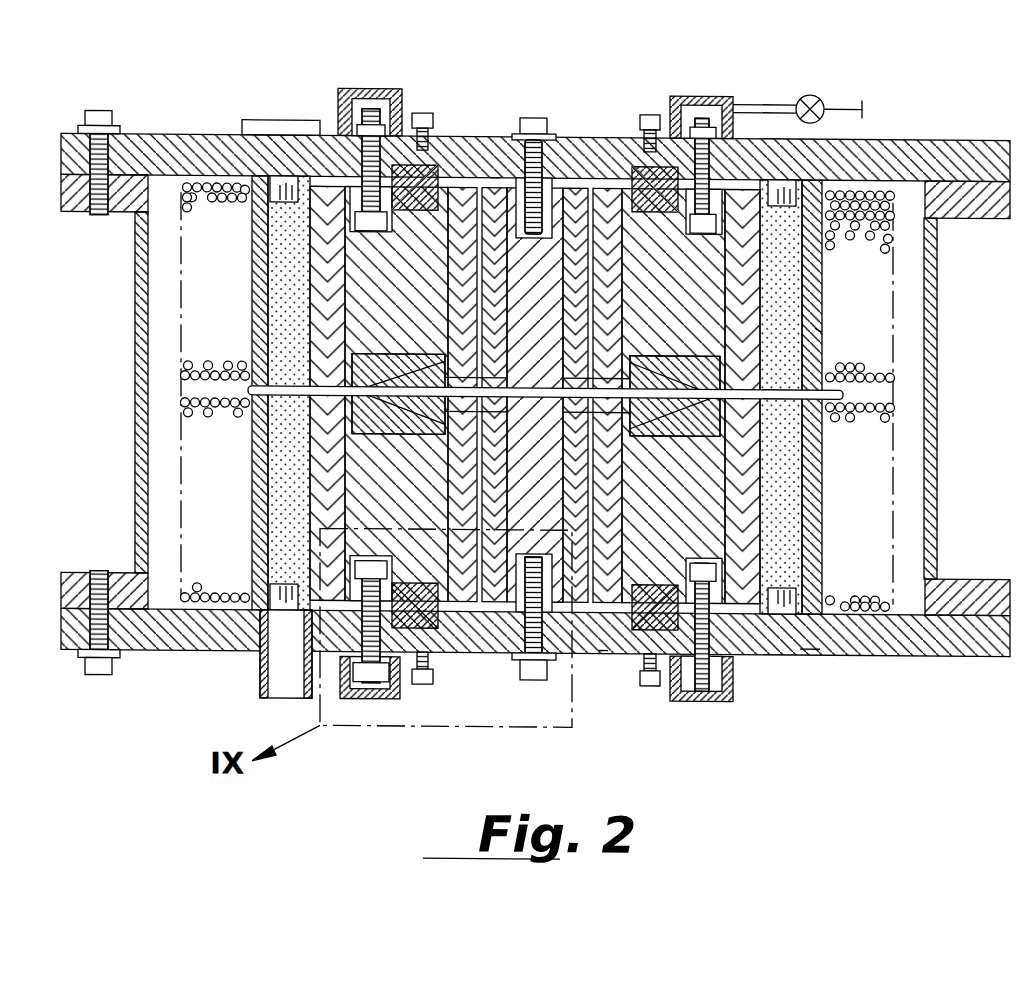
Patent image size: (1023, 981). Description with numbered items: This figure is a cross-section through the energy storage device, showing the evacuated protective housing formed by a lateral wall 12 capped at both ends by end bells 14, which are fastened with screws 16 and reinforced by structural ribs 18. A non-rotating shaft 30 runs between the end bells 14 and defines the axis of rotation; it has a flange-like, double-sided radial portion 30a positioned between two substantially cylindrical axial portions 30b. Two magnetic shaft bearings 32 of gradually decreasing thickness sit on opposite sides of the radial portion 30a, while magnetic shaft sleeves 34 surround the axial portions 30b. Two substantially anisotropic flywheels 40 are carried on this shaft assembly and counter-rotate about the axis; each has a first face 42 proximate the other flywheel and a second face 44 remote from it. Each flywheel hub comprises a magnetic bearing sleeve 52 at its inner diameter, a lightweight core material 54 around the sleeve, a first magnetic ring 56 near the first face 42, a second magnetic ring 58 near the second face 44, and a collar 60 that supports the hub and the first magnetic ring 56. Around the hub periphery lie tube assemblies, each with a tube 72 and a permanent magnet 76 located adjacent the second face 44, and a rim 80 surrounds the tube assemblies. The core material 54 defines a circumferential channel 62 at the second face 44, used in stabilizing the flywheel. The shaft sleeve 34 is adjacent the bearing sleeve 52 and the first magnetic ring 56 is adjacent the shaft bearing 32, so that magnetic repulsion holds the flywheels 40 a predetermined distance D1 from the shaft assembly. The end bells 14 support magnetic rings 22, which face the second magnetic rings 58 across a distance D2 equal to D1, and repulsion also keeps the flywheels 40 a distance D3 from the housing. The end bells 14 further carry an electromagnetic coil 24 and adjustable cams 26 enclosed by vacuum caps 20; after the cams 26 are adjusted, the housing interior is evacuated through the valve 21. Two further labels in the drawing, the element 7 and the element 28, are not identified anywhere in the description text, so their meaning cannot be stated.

The end bell 14 is at (160, 152).
The electromagnetic coil 24 is at (258, 121).
The permanent magnet 76 is at (283, 187).
The magnetic ring 22 is at (435, 186).
The predetermined distance D1 is at (492, 177).
The structural rib 18 is at (543, 190).
The axial portion 30b is at (583, 190).
The separation distance D2 is at (632, 150).
The vacuum cap 20 is at (728, 98).
The valve 21 is at (816, 96).
The collar 60 is at (790, 188).
The second face 44 is at (930, 140).
The flywheel 40 is at (895, 240).
The lateral wall 12 is at (135, 245).
The filter medium 7 is at (270, 265).
The rim 80 is at (185, 378).
The tube 72 is at (262, 445).
The screw 16 is at (95, 575).
The core material 54 is at (265, 512).
The circumferential channel 62 is at (282, 568).
The first face 42 is at (870, 400).
The magnetic shaft bearing 32 is at (668, 365).
The radial portion 30a is at (598, 385).
The first magnetic ring 56 is at (378, 430).
The adjustable cam 26 is at (775, 548).
The second magnetic ring 58 is at (447, 640).
The magnetic bearing sleeve 52 is at (480, 647).
The shaft 30 is at (583, 649).
The magnetic shaft sleeve 34 is at (602, 649).
The clamp bolt 28 is at (703, 692).
The separation distance D3 is at (810, 649).